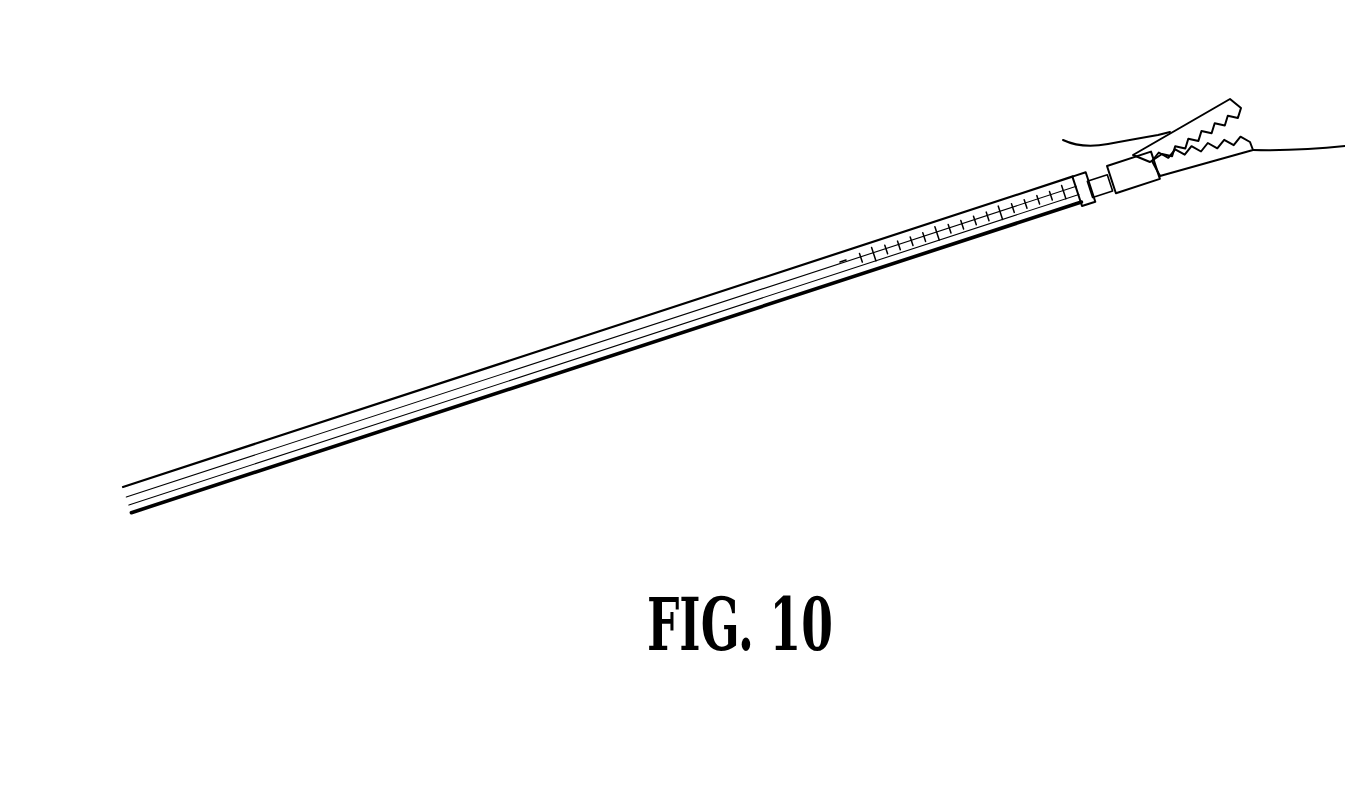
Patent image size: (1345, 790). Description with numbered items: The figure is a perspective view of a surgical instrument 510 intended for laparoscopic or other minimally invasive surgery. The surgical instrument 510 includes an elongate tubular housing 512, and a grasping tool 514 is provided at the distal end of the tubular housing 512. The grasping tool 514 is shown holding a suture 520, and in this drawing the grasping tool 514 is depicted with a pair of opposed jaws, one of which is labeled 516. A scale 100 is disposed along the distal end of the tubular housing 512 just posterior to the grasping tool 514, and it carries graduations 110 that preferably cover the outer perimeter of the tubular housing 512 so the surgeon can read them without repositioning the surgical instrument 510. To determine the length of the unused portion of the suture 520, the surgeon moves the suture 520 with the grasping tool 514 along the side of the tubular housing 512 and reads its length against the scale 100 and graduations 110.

The surgical instrument 510 is at (180, 389).
The elongate tubular housing 512 is at (265, 470).
The scale 100 is at (982, 196).
The graduations 110 is at (933, 245).
The grasping tool 514 is at (1193, 118).
The second jaw member 516 is at (1207, 169).
The suture 520 is at (1292, 155).